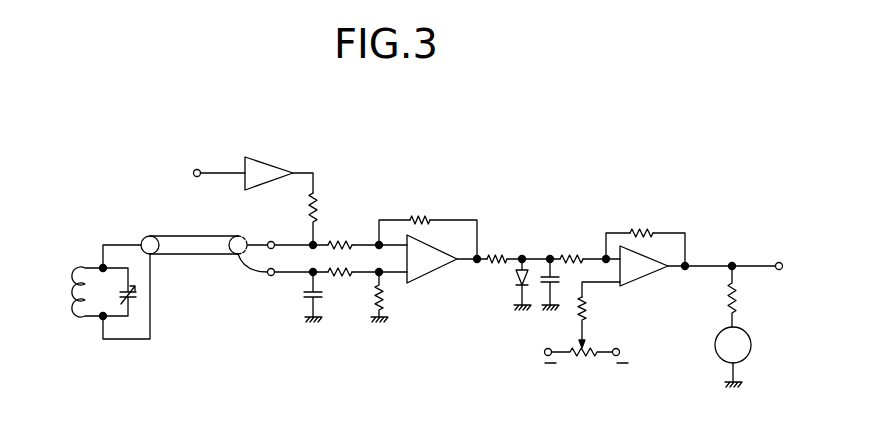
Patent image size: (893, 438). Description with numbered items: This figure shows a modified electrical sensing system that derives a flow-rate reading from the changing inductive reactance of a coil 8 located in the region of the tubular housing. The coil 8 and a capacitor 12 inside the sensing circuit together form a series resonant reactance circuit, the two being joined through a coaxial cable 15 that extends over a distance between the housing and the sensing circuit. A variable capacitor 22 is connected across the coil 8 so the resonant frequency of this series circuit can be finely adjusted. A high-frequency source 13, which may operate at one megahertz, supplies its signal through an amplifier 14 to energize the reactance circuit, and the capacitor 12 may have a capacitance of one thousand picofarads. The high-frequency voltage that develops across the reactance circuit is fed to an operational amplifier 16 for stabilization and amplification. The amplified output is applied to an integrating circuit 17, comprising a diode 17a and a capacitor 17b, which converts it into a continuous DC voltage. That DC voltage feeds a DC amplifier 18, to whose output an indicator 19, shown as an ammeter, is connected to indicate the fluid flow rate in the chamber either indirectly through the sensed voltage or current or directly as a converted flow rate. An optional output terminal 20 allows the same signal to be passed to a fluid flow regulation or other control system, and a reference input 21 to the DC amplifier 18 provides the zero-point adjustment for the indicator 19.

The winding 8 is at (96, 266).
The variable capacitor 22 is at (140, 310).
The coaxial cable 15 is at (182, 232).
The oscillator 13 is at (196, 170).
The amplifier 14 is at (262, 160).
The capacitor 12 is at (302, 297).
The operational amplifier 16 is at (431, 276).
The integrating circuit 17 is at (545, 270).
The diode 17a is at (515, 276).
The capacitor 17b is at (564, 282).
The DC amplifier 18 is at (665, 276).
The indicator 19 is at (718, 362).
The output terminal 20 is at (776, 262).
The reference input 21 is at (580, 360).